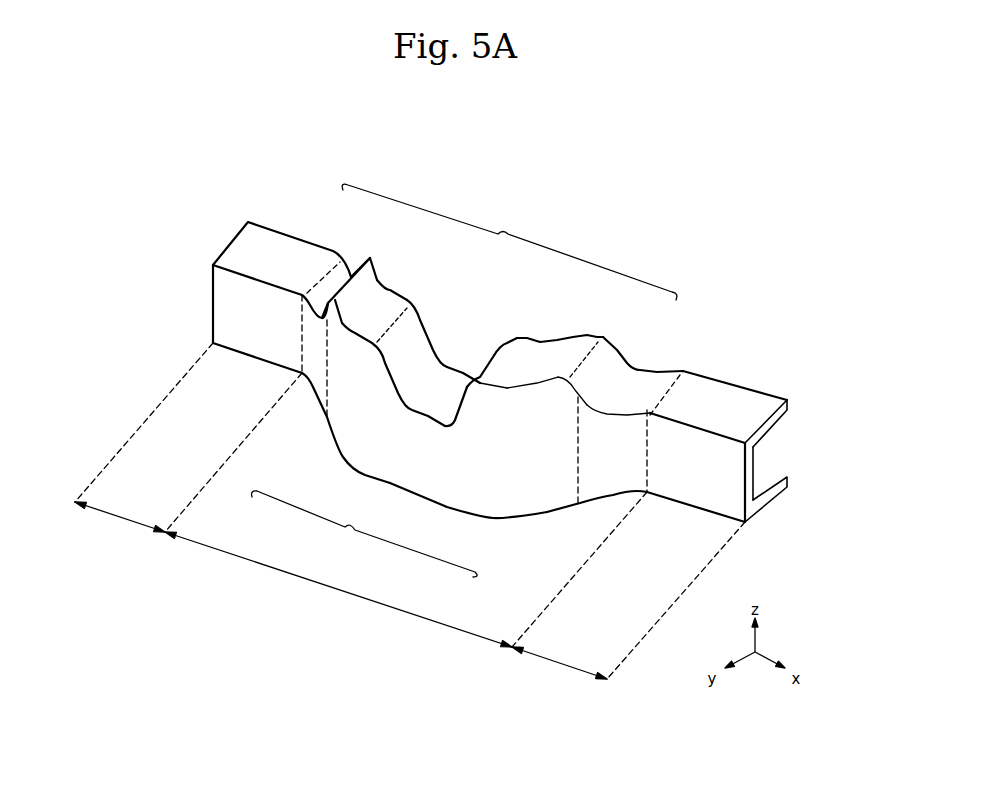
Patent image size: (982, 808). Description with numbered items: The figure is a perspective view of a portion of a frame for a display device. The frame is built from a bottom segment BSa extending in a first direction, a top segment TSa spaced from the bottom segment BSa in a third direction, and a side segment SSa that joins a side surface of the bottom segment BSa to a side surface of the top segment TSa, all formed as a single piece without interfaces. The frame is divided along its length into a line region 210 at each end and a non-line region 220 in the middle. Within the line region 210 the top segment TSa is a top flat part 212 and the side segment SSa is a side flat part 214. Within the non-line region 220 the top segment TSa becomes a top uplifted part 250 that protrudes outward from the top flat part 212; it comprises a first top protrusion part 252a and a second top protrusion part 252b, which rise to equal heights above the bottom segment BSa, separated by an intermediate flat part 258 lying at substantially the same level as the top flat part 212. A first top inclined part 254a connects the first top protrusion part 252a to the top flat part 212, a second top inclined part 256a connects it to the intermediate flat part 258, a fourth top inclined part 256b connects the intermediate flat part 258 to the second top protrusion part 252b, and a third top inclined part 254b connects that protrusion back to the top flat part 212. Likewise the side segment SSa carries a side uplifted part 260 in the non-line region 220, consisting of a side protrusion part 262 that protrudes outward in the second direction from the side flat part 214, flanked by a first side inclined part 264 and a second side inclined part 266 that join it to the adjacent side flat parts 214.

The line region 210 is at (410, 515).
The top flat part 212 is at (268, 253).
The side flat part 214 is at (257, 333).
The non-line region 220 is at (338, 589).
The top uplifted part 250 is at (502, 305).
The first top protrusion part 252a is at (373, 303).
The second top protrusion part 252b is at (543, 360).
The first top inclined part 254a is at (323, 302).
The third top inclined part 254b is at (618, 385).
The second top inclined part 256a is at (417, 340).
The fourth top inclined part 256b is at (515, 338).
The intermediate flat part 258 is at (450, 390).
The side uplifted part 260 is at (449, 448).
The side protrusion part 262 is at (413, 468).
The first side inclined part 264 is at (320, 382).
The second side inclined part 266 is at (607, 473).
The top segment TSa is at (770, 417).
The side segment SSa is at (755, 465).
The bottom segment BSa is at (775, 485).